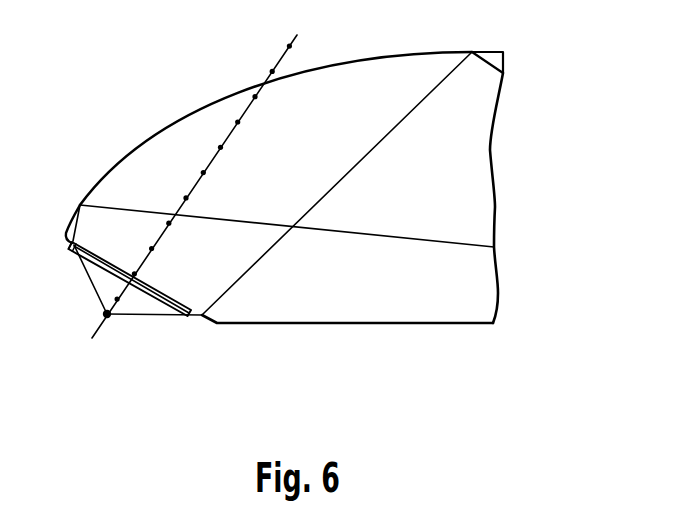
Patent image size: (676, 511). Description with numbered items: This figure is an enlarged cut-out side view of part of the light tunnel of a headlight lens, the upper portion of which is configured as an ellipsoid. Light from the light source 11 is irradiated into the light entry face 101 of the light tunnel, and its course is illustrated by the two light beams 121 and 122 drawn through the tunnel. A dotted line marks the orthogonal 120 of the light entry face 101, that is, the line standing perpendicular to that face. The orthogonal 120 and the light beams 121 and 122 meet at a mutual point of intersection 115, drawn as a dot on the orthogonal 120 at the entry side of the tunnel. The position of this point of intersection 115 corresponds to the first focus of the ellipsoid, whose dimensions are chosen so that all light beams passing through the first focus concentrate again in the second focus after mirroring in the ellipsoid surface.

The light source 11 is at (100, 285).
The light entry face 101 is at (160, 305).
The point of intersection 115 is at (111, 321).
The orthogonal of the light entry face 120 is at (228, 137).
The light beam 121 is at (120, 209).
The light beam 122 is at (240, 278).